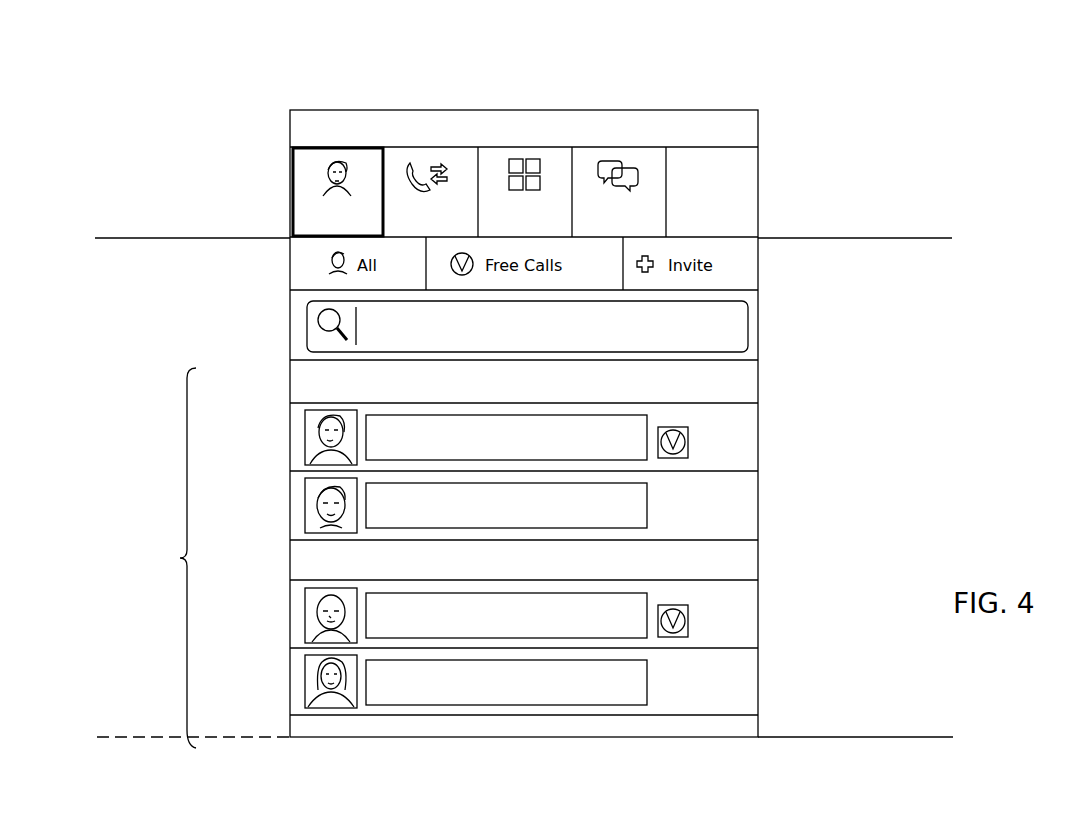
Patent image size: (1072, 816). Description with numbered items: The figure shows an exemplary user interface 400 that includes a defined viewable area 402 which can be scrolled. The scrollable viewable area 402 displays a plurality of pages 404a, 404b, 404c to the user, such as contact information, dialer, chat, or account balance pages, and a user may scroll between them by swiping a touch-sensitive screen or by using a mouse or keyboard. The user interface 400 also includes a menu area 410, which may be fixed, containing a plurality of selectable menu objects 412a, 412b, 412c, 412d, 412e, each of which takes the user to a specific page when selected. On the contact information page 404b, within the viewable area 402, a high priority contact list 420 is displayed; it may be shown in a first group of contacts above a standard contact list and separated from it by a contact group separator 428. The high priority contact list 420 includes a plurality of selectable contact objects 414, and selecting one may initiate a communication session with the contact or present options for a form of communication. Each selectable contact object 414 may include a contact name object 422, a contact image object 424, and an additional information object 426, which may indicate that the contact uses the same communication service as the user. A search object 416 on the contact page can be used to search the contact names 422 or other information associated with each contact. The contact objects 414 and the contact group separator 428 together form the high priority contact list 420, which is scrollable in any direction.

The user interface 400 is at (527, 31).
The viewable area 402 is at (514, 596).
The page 404a is at (190, 283).
The contact information page 404b is at (373, 728).
The page 404c is at (872, 281).
The menu area 410 is at (776, 176).
The menu object 412a is at (332, 148).
The menu object 412b is at (427, 148).
The menu object 412c is at (520, 148).
The menu object 412d is at (610, 148).
The menu object 412e is at (687, 148).
The contact object 414 is at (284, 424).
The search object 416 is at (741, 326).
The high priority contact list 420 is at (165, 558).
The contact name object 422 is at (440, 437).
The contact image object 424 is at (305, 450).
The additional information object 426 is at (673, 638).
The contact group separator 428 is at (417, 385).